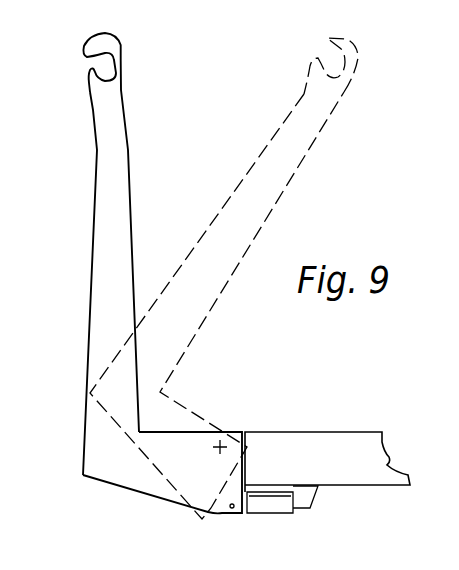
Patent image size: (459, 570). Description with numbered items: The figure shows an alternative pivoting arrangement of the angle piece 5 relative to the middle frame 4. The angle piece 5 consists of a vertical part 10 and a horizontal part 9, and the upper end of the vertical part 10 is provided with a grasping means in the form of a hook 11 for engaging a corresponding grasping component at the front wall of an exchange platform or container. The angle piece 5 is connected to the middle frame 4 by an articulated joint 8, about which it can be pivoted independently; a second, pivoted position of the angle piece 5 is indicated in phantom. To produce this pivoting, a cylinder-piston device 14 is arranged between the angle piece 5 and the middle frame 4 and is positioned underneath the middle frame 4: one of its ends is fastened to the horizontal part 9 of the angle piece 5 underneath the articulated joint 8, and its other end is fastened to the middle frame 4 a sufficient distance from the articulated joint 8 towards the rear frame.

The middle frame 4 is at (356, 443).
The angle piece 5 is at (195, 285).
The articulated joint 8 is at (222, 445).
The horizontal part 9 is at (142, 478).
The vertical part 10 is at (117, 200).
The hook 11 is at (118, 54).
The cylinder-piston device 14 is at (286, 500).